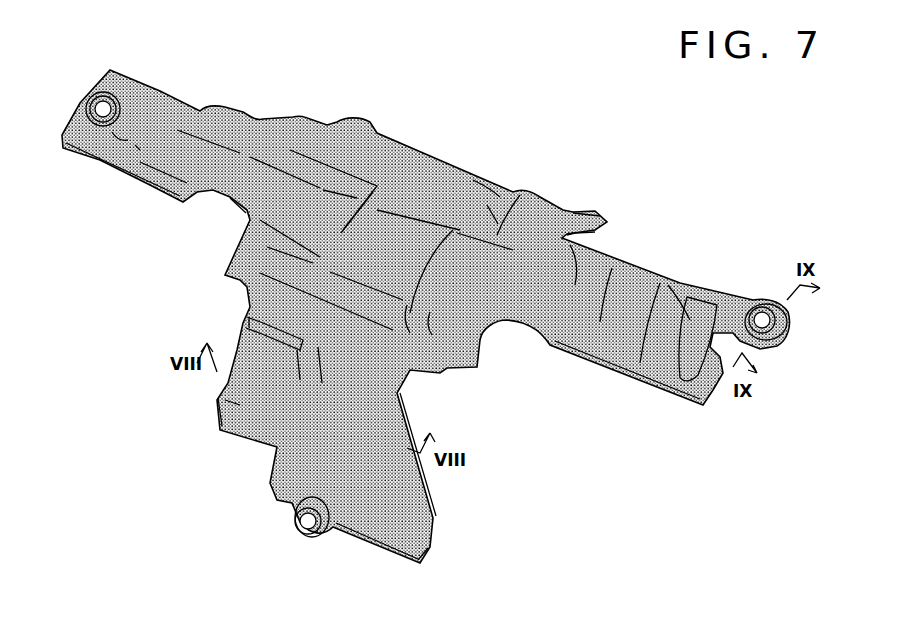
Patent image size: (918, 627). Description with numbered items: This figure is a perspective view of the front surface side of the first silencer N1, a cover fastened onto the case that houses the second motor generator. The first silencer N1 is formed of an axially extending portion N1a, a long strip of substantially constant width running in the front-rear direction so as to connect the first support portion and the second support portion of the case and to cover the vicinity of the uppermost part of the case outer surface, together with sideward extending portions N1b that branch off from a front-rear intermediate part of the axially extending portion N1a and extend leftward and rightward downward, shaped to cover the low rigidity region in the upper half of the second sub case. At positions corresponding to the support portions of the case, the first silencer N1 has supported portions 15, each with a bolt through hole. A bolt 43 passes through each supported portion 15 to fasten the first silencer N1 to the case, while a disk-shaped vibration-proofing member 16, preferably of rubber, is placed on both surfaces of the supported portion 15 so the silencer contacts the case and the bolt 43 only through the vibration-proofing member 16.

The first silencer N1 is at (438, 160).
The axially extending portion N1a is at (128, 140).
The sideward extending portion N1b is at (497, 187).
The supported portion 15 is at (90, 97).
The vibration-proofing member 16 is at (118, 103).
The bolt 43 is at (103, 97).